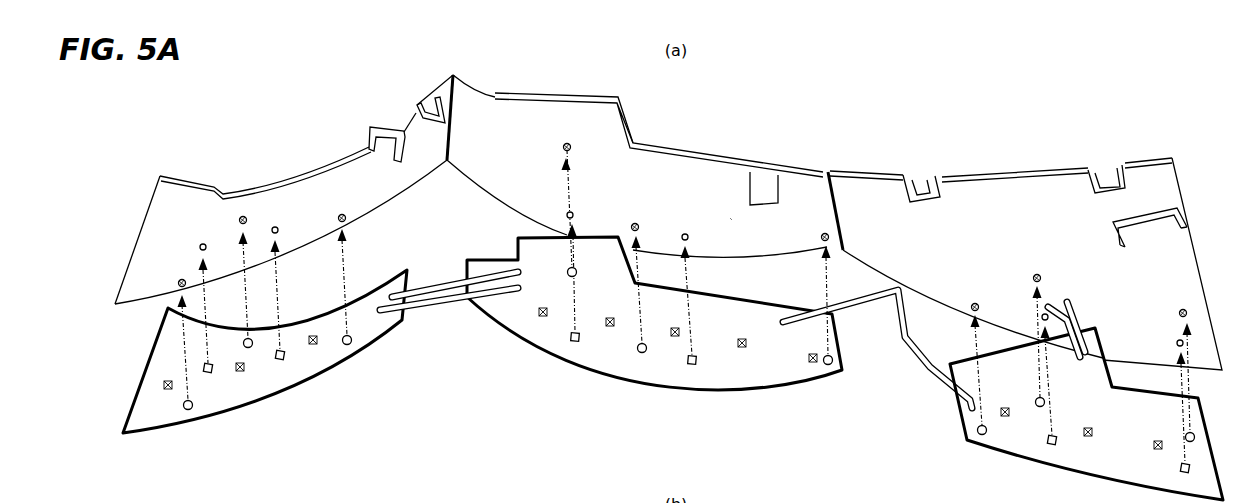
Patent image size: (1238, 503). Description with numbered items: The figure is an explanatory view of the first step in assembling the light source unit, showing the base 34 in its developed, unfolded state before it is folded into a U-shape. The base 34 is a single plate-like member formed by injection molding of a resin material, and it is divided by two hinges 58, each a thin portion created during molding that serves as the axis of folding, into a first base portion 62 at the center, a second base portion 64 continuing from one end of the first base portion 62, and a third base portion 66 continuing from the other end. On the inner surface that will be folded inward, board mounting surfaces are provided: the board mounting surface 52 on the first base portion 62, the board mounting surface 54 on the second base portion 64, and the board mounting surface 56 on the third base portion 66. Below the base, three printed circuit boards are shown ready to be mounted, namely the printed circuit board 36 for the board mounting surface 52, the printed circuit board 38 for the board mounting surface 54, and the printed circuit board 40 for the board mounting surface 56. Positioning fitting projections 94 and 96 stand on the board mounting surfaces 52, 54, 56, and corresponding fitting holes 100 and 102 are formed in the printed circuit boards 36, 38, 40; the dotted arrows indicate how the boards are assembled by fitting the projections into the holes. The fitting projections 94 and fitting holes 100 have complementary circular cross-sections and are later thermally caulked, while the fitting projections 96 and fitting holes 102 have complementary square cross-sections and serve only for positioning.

The base 34 is at (1143, 154).
The printed circuit board 36 is at (500, 335).
The printed circuit board 38 is at (955, 415).
The printed circuit board 40 is at (143, 436).
The board mounting surface 52 is at (730, 218).
The board mounting surface 54 is at (920, 263).
The board mounting surface 56 is at (305, 200).
The hinge 58 is at (453, 75).
The first base portion 62 is at (700, 162).
The second base portion 64 is at (1078, 185).
The third base portion 66 is at (197, 180).
The fitting projection 94 is at (180, 280).
The fitting projection 96 is at (201, 243).
The fitting hole 100 is at (190, 410).
The fitting hole 102 is at (212, 373).